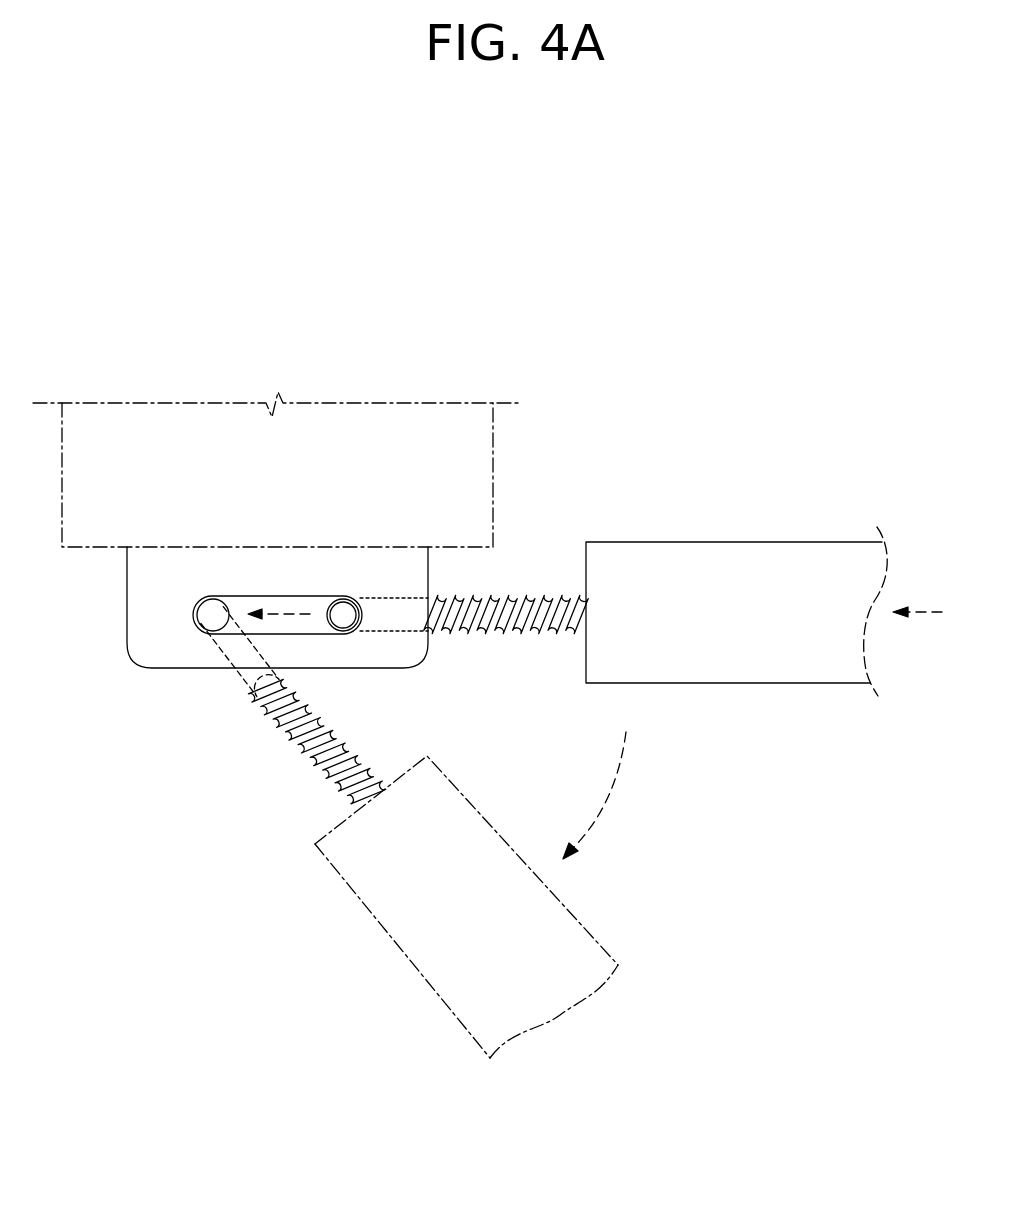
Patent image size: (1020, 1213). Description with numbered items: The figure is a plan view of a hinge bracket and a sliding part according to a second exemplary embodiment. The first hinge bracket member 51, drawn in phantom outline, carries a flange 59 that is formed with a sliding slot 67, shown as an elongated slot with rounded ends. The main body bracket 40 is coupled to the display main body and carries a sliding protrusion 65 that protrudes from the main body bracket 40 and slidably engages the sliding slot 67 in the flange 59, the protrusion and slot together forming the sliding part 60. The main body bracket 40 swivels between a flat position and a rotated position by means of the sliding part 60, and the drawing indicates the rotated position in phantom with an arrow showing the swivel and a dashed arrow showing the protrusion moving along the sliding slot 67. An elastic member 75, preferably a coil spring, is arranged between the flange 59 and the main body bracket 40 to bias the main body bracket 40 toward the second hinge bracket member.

The main body bracket 40 is at (744, 543).
The first hinge bracket member 51 is at (338, 405).
The flange 59 is at (170, 560).
The sliding part 60 is at (162, 753).
The sliding protrusion 65 is at (343, 620).
The sliding slot 67 is at (232, 607).
The elastic member 75 is at (527, 585).